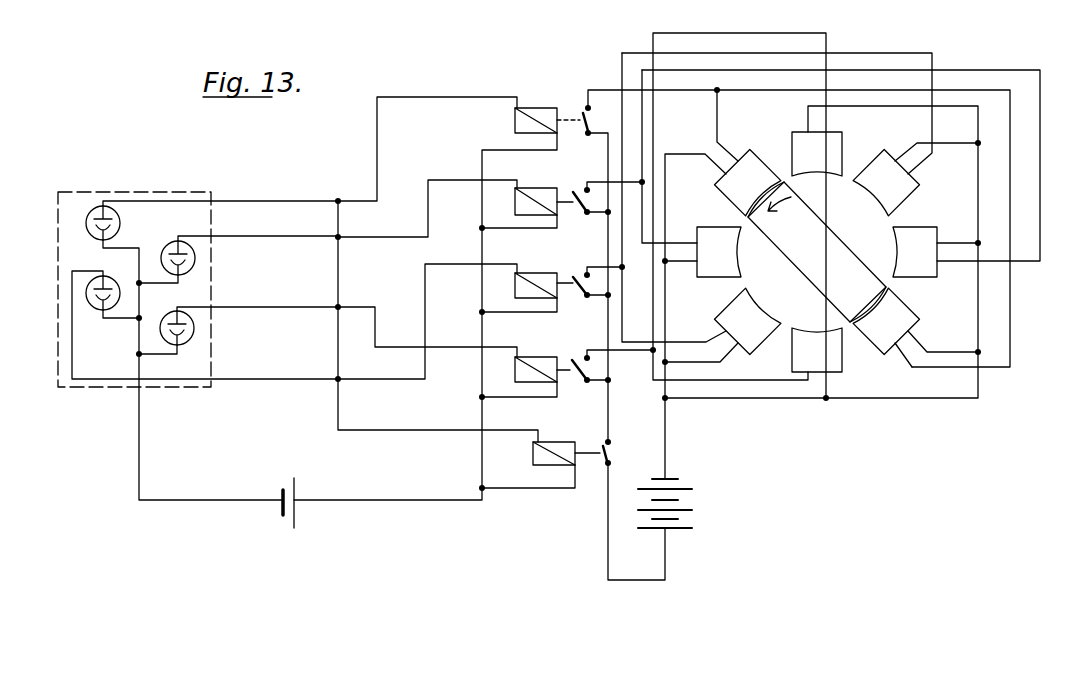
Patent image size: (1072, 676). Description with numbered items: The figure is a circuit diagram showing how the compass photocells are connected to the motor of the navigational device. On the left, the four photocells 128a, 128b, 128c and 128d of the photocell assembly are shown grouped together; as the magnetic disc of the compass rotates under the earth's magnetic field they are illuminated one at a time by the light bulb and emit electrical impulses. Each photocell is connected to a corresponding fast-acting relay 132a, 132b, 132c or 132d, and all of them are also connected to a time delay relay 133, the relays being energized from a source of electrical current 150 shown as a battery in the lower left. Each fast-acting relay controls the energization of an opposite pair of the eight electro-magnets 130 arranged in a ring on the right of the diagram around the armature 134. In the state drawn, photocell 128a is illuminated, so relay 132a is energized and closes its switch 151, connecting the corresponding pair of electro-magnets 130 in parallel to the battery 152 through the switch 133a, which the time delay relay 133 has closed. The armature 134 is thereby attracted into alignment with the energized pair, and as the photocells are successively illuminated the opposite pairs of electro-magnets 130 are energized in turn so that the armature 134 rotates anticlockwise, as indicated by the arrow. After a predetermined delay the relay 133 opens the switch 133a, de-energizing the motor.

The photocell 128a is at (110, 211).
The photocell 128b is at (195, 263).
The photocell 128c is at (97, 312).
The photocell 128d is at (195, 338).
The electro-magnet 130 is at (907, 238).
The fast-acting relay 132a is at (514, 118).
The fast-acting relay 132b is at (515, 198).
The fast-acting relay 132c is at (514, 282).
The fast-acting relay 132d is at (514, 370).
The time delay relay 133 is at (557, 443).
The switch 133a is at (607, 457).
The armature 134 is at (817, 252).
The source of electrical current 150 is at (295, 521).
The switch 151 is at (584, 119).
The battery 152 is at (682, 505).